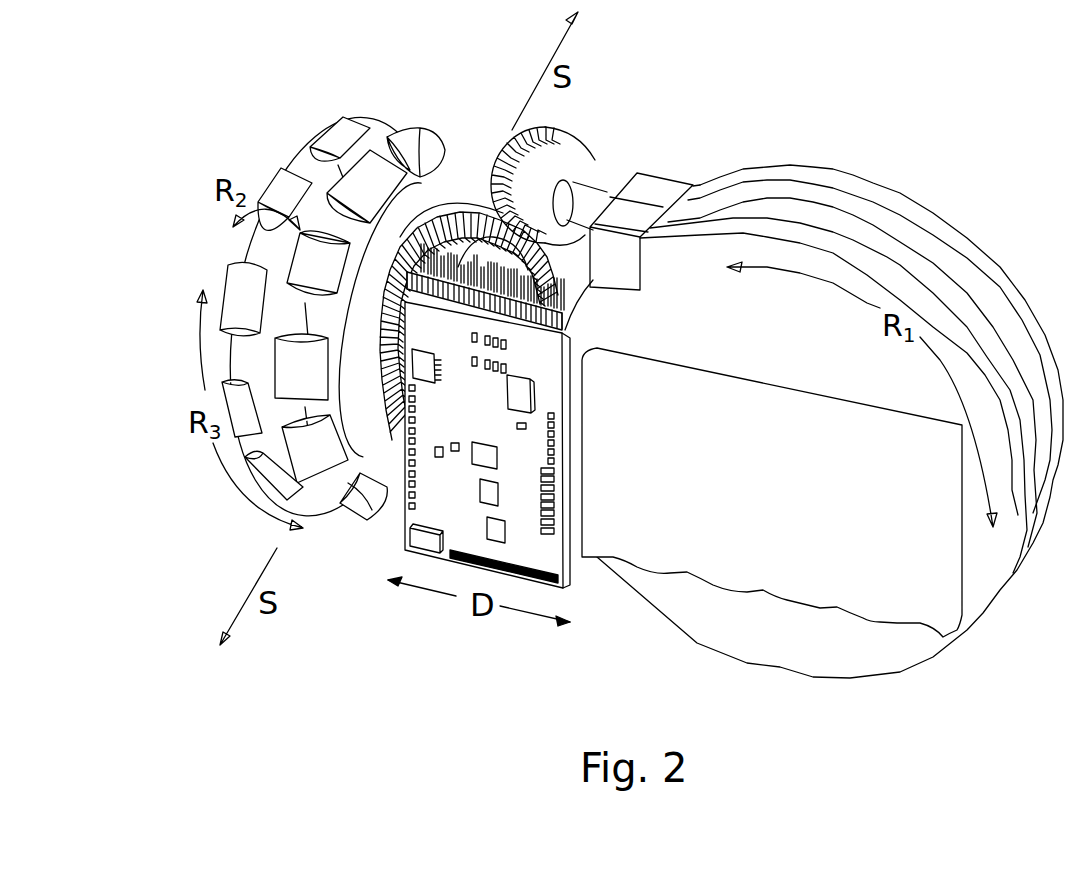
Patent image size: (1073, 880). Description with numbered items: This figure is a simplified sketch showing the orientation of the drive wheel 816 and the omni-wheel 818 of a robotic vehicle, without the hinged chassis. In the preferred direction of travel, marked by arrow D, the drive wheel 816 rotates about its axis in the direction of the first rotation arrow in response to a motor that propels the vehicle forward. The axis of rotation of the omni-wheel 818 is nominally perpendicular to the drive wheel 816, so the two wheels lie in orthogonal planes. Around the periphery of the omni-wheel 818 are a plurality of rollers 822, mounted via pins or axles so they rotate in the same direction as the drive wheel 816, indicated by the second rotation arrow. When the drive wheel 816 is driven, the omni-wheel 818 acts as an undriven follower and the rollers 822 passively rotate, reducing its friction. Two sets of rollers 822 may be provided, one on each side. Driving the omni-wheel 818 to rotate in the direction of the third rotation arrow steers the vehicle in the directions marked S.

The drive wheel 816 is at (897, 187).
The omni-wheel 818 is at (245, 257).
The rollers 822 is at (338, 127).